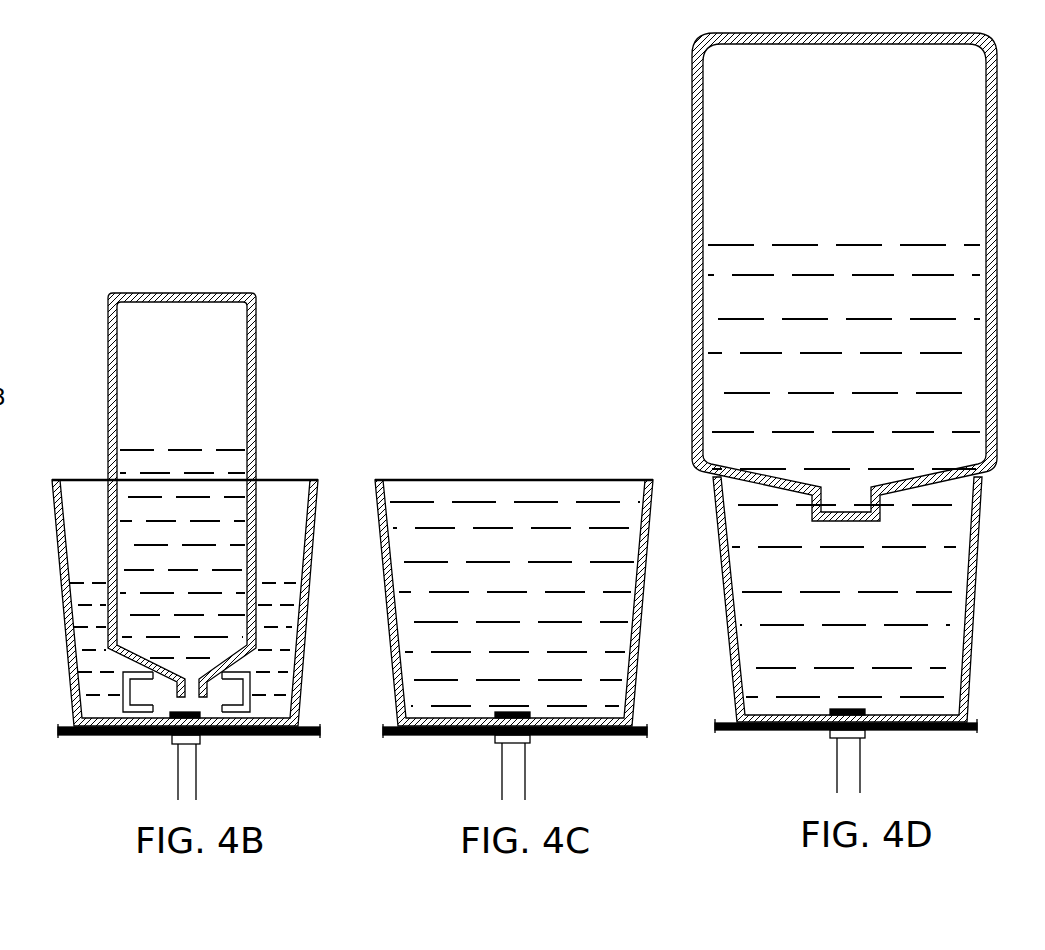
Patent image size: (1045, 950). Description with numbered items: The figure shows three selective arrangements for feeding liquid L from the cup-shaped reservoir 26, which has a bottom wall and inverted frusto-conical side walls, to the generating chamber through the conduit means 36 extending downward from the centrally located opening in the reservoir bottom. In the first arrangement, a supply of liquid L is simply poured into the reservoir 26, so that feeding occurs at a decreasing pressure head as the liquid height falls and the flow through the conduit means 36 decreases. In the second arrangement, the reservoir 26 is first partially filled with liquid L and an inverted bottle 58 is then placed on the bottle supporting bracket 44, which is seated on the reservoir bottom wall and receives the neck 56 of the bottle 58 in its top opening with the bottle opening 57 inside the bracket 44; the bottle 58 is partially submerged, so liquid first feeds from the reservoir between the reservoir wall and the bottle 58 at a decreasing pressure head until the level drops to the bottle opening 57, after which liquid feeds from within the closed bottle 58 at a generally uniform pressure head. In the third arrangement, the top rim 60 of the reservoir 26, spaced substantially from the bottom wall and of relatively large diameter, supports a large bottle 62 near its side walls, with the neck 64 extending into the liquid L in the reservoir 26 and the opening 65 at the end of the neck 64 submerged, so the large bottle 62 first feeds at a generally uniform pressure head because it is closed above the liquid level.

In FIG. 4B, the cup-shaped reservoir 26 is at (57, 596).
In FIG. 4C, the cup-shaped reservoir 26 is at (385, 601).
In FIG. 4D, the cup-shaped reservoir 26 is at (722, 588).
In FIG. 4B, the conduit means 36 is at (200, 771).
In FIG. 4C, the conduit means 36 is at (527, 770).
In FIG. 4D, the conduit means 36 is at (835, 762).
In FIG. 4B, the bottle supporting bracket 44 is at (122, 688).
In FIG. 4B, the neck 56 is at (170, 684).
In FIG. 4B, the bottle opening 57 is at (190, 697).
In FIG. 4B, the inverted bottle 58 is at (257, 362).
In FIG. 4D, the top rim 60 is at (990, 472).
In FIG. 4D, the large bottle 62 is at (690, 245).
In FIG. 4D, the neck 64 is at (807, 512).
In FIG. 4D, the opening 65 is at (843, 530).
In FIG. 4B, the liquid L is at (172, 458).
In FIG. 4C, the liquid L is at (495, 487).
In FIG. 4D, the liquid L is at (832, 257).